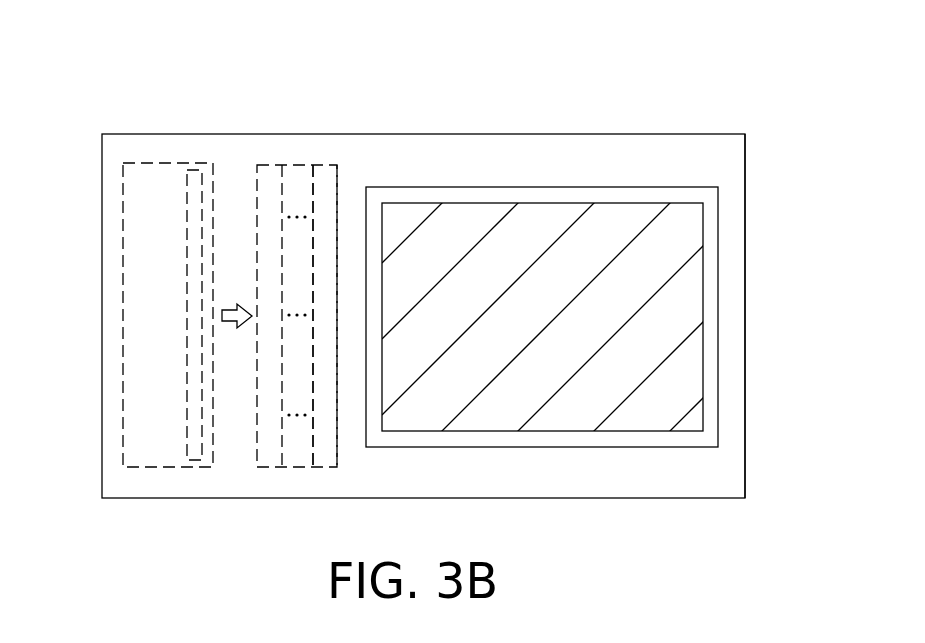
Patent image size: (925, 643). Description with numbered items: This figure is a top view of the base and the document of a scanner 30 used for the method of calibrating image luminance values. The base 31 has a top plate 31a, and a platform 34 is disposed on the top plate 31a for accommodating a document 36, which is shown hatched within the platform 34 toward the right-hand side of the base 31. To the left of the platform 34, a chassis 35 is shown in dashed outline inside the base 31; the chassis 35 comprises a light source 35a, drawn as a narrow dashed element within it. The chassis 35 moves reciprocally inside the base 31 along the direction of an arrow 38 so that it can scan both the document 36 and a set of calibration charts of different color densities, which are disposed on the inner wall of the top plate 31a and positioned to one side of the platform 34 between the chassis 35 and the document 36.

The scanner 30 is at (814, 58).
The base 31 is at (745, 315).
The top plate 31a is at (732, 268).
The platform 34 is at (678, 193).
The chassis 35 is at (122, 314).
The light source 35a is at (195, 163).
The document 36 is at (605, 225).
The arrow 38 is at (227, 321).